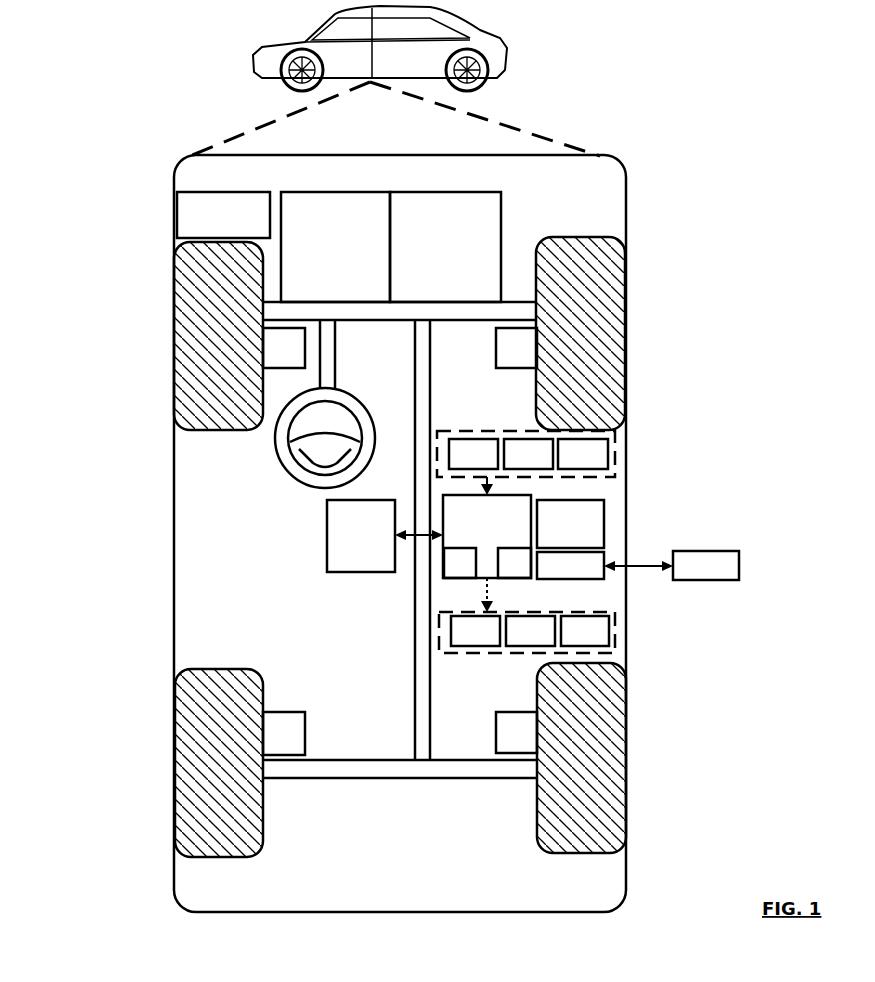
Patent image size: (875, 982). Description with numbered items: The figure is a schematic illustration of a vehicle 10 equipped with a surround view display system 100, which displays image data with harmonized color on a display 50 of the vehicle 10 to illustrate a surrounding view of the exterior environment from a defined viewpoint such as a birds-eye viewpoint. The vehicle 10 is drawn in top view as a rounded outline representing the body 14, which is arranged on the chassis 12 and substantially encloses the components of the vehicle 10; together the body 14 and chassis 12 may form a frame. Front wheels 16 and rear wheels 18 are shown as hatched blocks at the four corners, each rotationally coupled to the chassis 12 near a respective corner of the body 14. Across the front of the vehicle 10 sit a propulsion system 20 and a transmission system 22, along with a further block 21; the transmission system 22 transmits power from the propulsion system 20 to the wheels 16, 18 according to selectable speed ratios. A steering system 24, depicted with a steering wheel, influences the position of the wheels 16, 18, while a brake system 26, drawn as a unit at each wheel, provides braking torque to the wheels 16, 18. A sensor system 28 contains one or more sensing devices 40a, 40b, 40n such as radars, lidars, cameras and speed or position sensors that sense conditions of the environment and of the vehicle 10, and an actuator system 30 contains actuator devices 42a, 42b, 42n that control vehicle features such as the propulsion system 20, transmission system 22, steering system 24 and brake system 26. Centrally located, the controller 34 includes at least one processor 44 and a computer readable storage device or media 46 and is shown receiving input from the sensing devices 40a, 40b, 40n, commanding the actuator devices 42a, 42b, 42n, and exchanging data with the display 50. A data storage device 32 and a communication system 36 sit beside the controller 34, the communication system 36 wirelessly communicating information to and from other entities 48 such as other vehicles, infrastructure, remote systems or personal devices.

The vehicle 10 is at (255, 56).
The surround view display system 100 is at (782, 111).
The chassis 12 is at (413, 692).
The body 14 is at (174, 518).
The front wheels 16 is at (566, 237).
The rear wheels 18 is at (230, 858).
The propulsion system 20 is at (335, 247).
The battery 21 is at (223, 215).
The transmission system 22 is at (445, 247).
The steering system 24 is at (362, 345).
The brake system 26 is at (400, 541).
The sensor system 28 is at (456, 432).
The actuator system 30 is at (487, 656).
The data storage device 32 is at (570, 524).
The controller 34 is at (487, 536).
The communication system 36 is at (570, 565).
The sensing device 40a is at (473, 454).
The sensing device 40b is at (528, 454).
The sensing device 40n is at (583, 454).
The actuator device 42a is at (475, 631).
The actuator device 42b is at (530, 631).
The actuator device 42n is at (585, 631).
The processor 44 is at (460, 563).
The computer readable storage device or media 46 is at (514, 563).
The other entities 48 is at (706, 565).
The display 50 is at (361, 536).